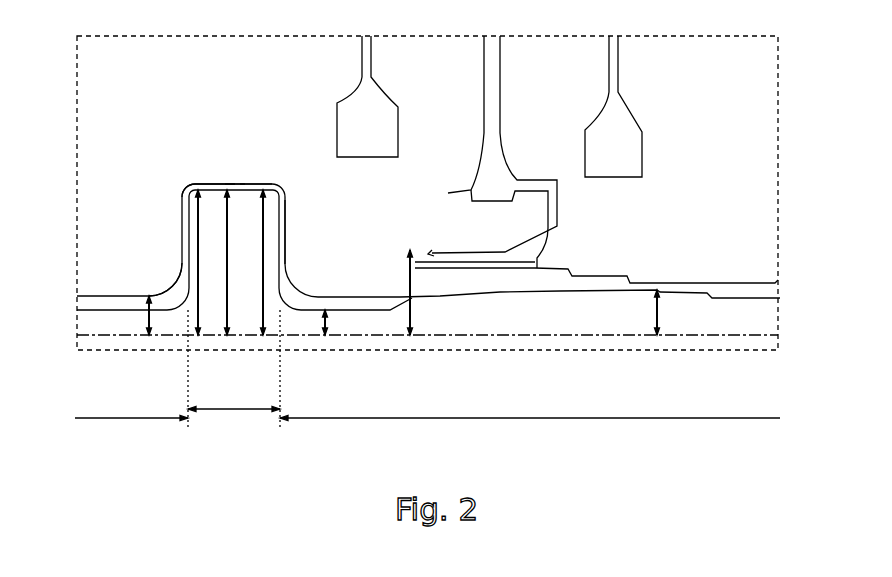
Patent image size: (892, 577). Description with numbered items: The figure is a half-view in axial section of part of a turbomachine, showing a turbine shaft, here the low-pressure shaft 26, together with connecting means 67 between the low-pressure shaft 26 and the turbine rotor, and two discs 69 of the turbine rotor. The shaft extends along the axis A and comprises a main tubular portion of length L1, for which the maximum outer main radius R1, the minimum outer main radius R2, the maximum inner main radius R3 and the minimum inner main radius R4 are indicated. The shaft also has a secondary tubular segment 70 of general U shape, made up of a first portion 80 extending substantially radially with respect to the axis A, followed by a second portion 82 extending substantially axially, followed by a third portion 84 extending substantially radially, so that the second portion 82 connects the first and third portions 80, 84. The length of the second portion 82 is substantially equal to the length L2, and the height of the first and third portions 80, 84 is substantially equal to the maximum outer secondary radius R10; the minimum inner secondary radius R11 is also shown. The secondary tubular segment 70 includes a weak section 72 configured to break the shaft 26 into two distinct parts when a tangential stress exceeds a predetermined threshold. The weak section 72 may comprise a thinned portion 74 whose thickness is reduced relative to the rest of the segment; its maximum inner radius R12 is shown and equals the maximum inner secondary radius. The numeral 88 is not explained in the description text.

The low-pressure shaft 26 is at (112, 308).
The connecting means 67 is at (513, 152).
The discs 69 is at (391, 127).
The secondary tubular segment 70 is at (256, 186).
The weak section 72 is at (227, 176).
The thinned portion 74 is at (233, 185).
The first portion 80 is at (182, 226).
The second portion 82 is at (198, 186).
The third portion 84 is at (286, 236).
The band right portion 88 is at (345, 297).
The maximum outer main radius R1 is at (413, 313).
The minimum outer main radius R2 is at (148, 321).
The maximum inner main radius R3 is at (657, 305).
The minimum inner main radius R4 is at (327, 320).
The maximum outer secondary radius R10 is at (200, 306).
The minimum inner secondary radius R11 is at (263, 305).
The maximum inner radius of the thinned tubular portion R12 is at (227, 262).
The length of the main tubular portion L1 is at (427, 434).
The length of the second portion L2 is at (234, 374).
The axis A is at (437, 331).